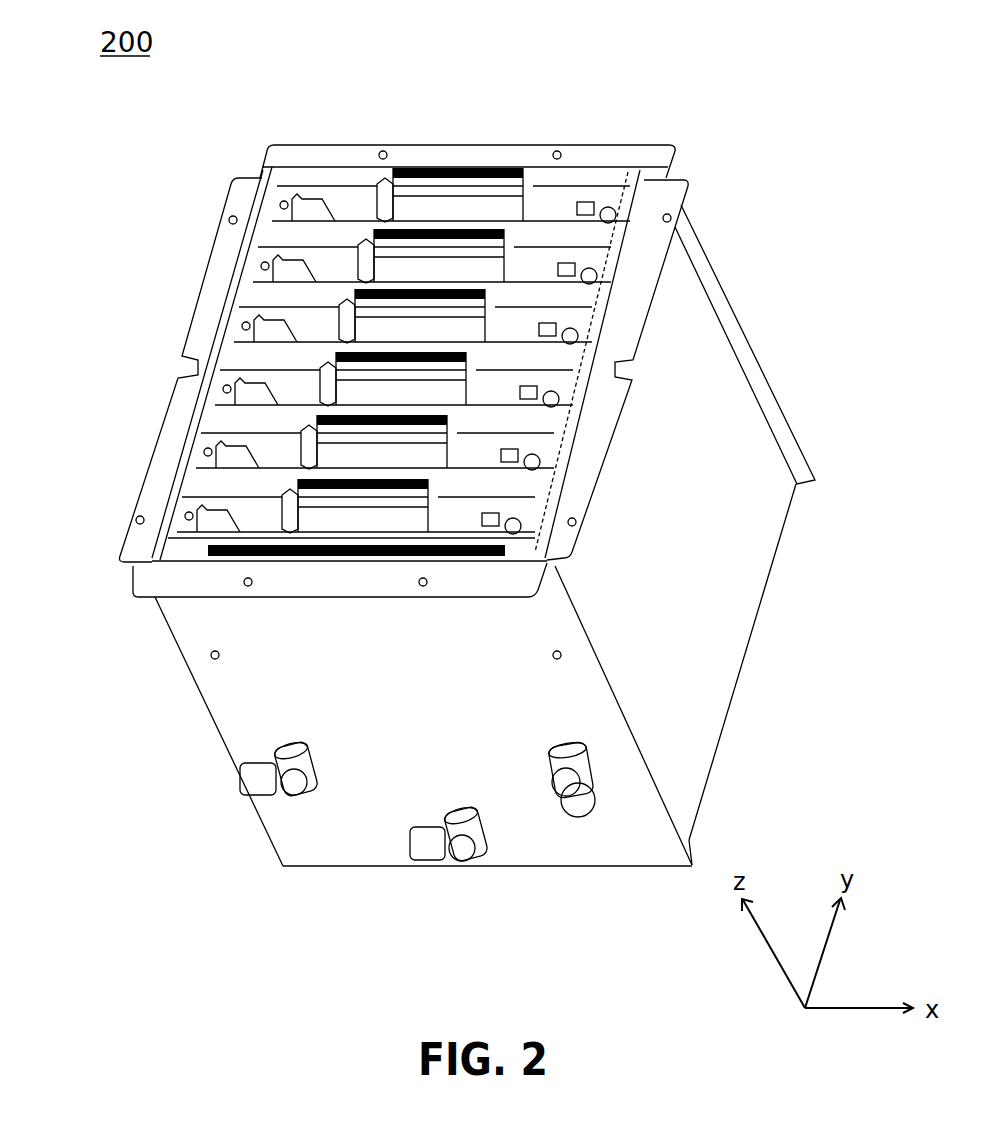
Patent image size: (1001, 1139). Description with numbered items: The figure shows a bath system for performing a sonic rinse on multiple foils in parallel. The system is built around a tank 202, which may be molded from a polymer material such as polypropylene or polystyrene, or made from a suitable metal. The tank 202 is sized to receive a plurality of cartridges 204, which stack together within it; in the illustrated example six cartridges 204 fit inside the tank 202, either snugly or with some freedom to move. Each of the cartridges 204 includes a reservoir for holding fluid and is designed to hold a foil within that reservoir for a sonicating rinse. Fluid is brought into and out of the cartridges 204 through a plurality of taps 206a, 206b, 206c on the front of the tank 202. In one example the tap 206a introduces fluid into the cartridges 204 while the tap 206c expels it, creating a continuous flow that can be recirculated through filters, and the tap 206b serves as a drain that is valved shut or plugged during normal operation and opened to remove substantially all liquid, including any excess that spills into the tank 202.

The tank 202 is at (702, 624).
The cartridges 204 is at (170, 522).
The tap 206a is at (293, 792).
The tap 206b is at (448, 862).
The tap 206c is at (556, 805).